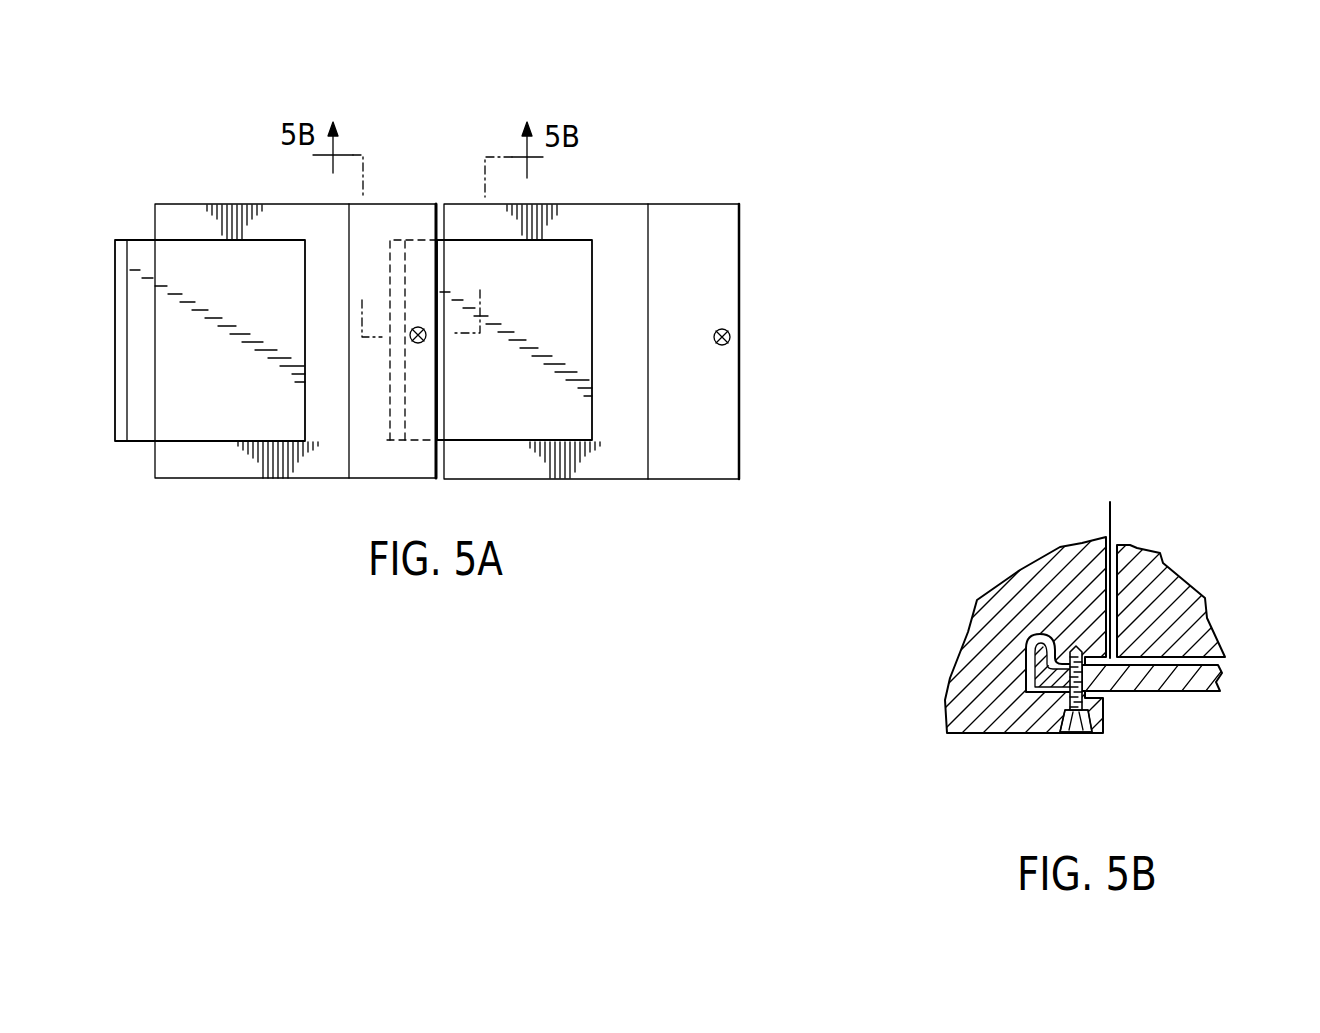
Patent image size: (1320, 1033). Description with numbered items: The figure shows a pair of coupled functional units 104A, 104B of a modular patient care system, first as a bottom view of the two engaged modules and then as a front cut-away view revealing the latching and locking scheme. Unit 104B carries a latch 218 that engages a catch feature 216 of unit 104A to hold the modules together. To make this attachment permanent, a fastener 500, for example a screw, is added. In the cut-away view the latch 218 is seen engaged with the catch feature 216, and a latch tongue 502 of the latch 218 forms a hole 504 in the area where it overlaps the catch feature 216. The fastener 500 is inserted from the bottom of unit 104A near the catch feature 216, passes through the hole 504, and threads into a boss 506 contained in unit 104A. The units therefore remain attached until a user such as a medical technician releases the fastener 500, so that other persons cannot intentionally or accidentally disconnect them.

In FIG. 5A, the functional unit 104A is at (186, 184).
In FIG. 5A, the functional unit 104B is at (729, 174).
In FIG. 5A, the catch feature 216 is at (415, 203).
In FIG. 5B, the catch feature 216 is at (1007, 657).
In FIG. 5A, the latch 218 is at (533, 275).
In FIG. 5B, the latch 218 is at (1220, 703).
In FIG. 5A, the fastener 500 is at (427, 344).
In FIG. 5B, the fastener 500 is at (1073, 733).
In FIG. 5B, the latch tongue 502 is at (1125, 695).
In FIG. 5B, the hole 504 is at (1035, 733).
In FIG. 5B, the boss 506 is at (1073, 655).